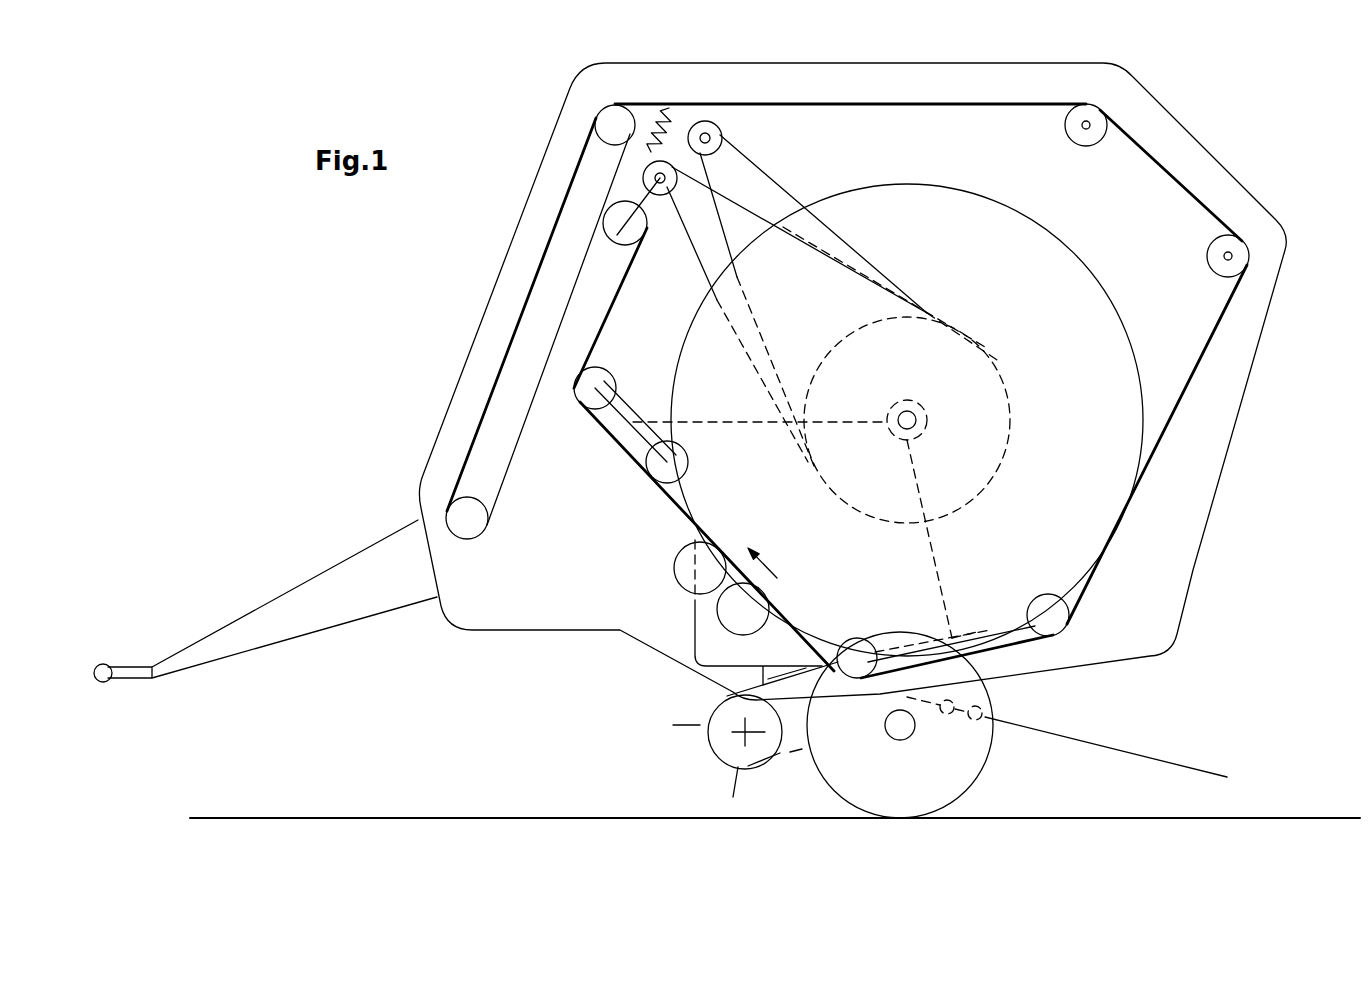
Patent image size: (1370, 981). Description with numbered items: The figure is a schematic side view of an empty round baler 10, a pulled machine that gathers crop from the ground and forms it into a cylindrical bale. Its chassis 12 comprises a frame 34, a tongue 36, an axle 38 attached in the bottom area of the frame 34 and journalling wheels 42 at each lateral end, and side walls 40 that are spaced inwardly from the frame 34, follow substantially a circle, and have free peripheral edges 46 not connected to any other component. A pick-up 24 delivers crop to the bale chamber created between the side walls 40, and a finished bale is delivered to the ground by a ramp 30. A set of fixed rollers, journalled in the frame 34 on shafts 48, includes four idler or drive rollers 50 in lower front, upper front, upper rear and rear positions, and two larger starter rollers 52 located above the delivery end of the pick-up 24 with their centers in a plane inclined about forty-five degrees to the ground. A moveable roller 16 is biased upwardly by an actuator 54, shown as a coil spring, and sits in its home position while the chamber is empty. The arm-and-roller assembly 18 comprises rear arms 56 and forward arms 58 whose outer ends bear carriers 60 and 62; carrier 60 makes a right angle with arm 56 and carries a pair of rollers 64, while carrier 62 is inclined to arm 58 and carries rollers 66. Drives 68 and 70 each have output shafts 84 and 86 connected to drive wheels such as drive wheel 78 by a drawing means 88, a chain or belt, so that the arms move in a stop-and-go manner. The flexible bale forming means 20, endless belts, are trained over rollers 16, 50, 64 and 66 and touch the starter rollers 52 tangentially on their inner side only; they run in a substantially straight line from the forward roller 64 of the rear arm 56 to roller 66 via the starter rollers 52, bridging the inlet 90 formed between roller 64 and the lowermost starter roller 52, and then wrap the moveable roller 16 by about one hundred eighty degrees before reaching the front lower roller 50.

The round baler 10 is at (295, 309).
The chassis 12 is at (487, 227).
The moveable roller 16 is at (608, 218).
The arm-and-roller assembly 18 is at (810, 159).
The flexible bale forming means 20 is at (505, 492).
The pick-up 24 is at (733, 752).
The ramp 30 is at (1175, 760).
The frame 34 is at (483, 360).
The tongue 36 is at (232, 618).
The axle 38 is at (905, 740).
The side walls 40 is at (984, 250).
The wheels 42 is at (965, 762).
The peripheral edges 46 is at (1140, 390).
The shafts 48 is at (1082, 132).
The idler or drive rollers 50 is at (612, 130).
The starter rollers 52 is at (727, 627).
The actuator 54 is at (660, 105).
The arms 56 is at (943, 548).
The arms 58 is at (860, 418).
The carrier 60 is at (990, 652).
The carrier 62 is at (624, 423).
The rollers 64 is at (1068, 622).
The rollers 66 is at (672, 470).
The drive 68 is at (682, 273).
The drive 70 is at (866, 228).
The drive wheel 78 is at (975, 375).
The output shafts 84 is at (720, 135).
The output shafts 86 is at (664, 170).
The drawing means 88 is at (838, 252).
The inlet 90 is at (776, 651).